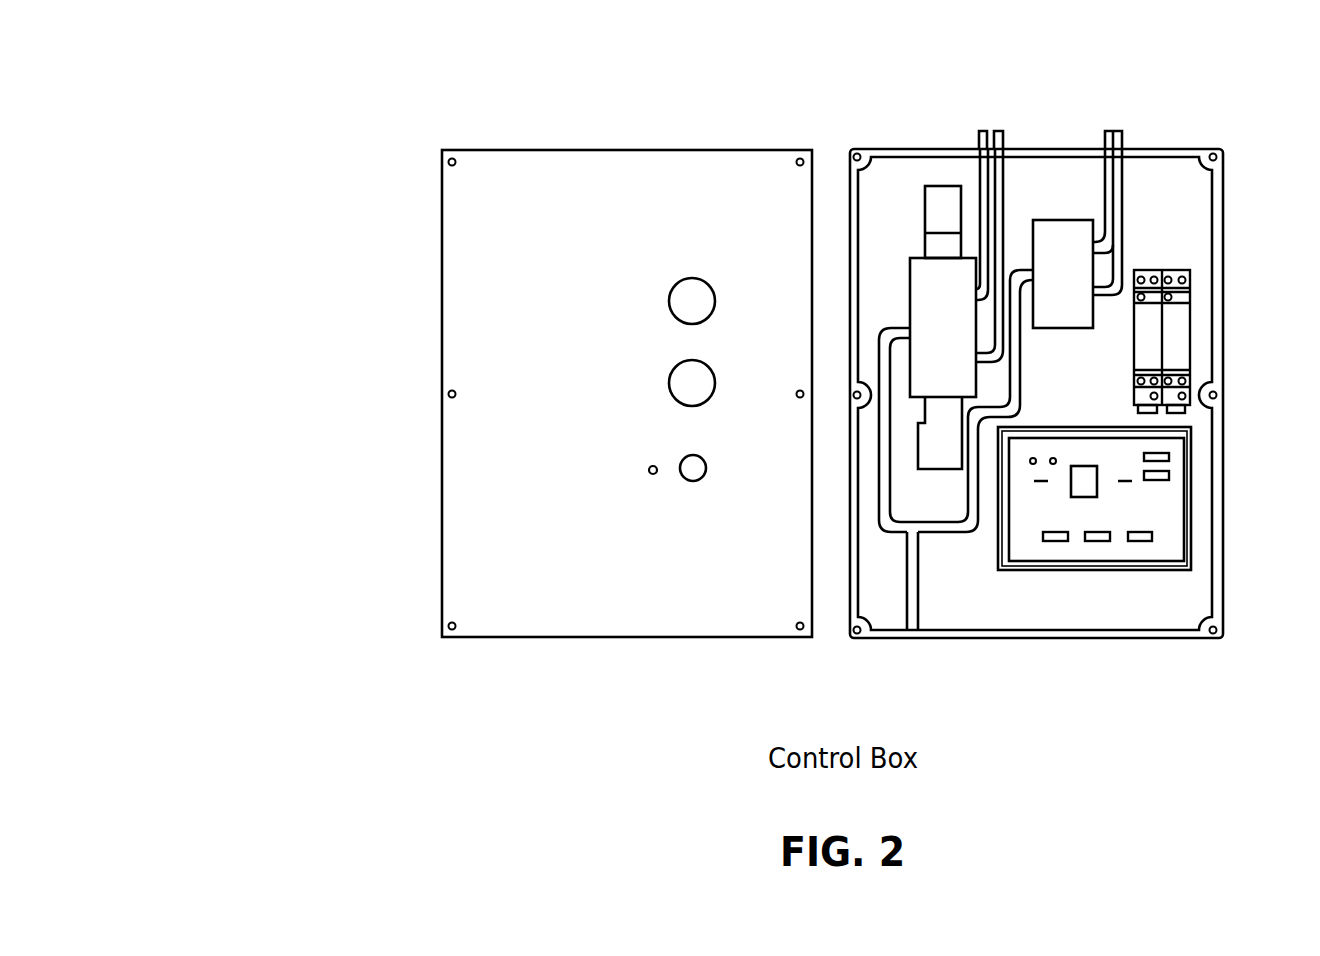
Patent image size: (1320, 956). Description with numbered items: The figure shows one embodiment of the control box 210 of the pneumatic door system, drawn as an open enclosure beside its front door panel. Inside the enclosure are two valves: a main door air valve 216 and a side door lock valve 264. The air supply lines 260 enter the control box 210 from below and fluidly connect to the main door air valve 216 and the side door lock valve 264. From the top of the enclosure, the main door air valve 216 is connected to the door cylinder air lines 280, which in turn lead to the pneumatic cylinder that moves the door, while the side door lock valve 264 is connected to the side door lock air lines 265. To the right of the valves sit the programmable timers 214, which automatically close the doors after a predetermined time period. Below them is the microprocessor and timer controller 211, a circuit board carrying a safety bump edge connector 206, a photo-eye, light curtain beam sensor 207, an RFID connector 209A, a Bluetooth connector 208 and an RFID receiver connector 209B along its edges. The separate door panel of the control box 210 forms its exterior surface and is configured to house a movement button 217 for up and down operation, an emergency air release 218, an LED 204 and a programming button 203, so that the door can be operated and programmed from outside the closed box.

The control box 210 is at (315, 85).
The movement button 217 is at (692, 301).
The emergency air release 218 is at (692, 383).
The programming button 203 is at (690, 467).
The LED 204 is at (647, 472).
The main door air valve 216 is at (938, 313).
The door cylinder air lines 280 is at (982, 132).
The side door lock valve 264 is at (1057, 258).
The side door lock air lines 265 is at (1122, 131).
The air supply lines 260 is at (908, 620).
The programmable timers 214 is at (1163, 330).
The microprocessor and timer controller 211 is at (1112, 453).
The safety bump edge connector 206 is at (1170, 462).
The photo-eye, light curtain beam sensor 207 is at (1163, 483).
The RFID connector 209A is at (1050, 545).
The Bluetooth connector 208 is at (1098, 545).
The RFID receiver connector 209B is at (1150, 545).